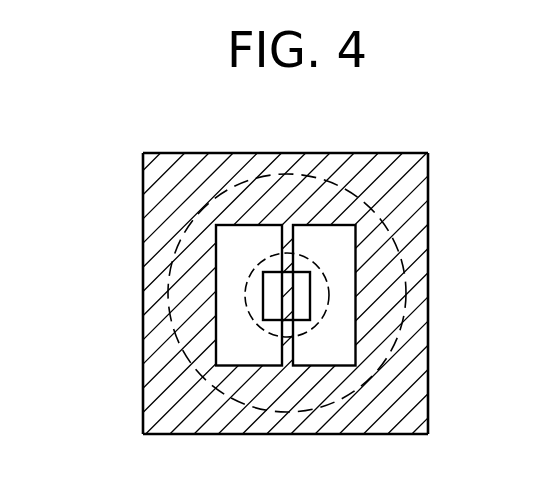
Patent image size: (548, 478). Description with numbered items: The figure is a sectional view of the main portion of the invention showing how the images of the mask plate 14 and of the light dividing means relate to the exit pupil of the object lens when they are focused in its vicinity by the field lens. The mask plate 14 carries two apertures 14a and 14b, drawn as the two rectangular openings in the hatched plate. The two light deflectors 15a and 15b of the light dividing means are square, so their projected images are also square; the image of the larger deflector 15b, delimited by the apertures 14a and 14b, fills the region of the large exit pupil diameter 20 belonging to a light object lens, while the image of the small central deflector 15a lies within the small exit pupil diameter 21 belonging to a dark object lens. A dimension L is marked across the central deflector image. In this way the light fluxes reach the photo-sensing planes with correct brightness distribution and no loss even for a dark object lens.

The mask plate 14 is at (345, 153).
The aperture 14a is at (217, 332).
The aperture 14b is at (358, 333).
The light deflector 15a is at (300, 297).
The light deflector 15b is at (347, 239).
The exit pupil diameter 20 is at (248, 175).
The exit pupil diameter 21 is at (325, 268).
The length dimension L is at (283, 286).